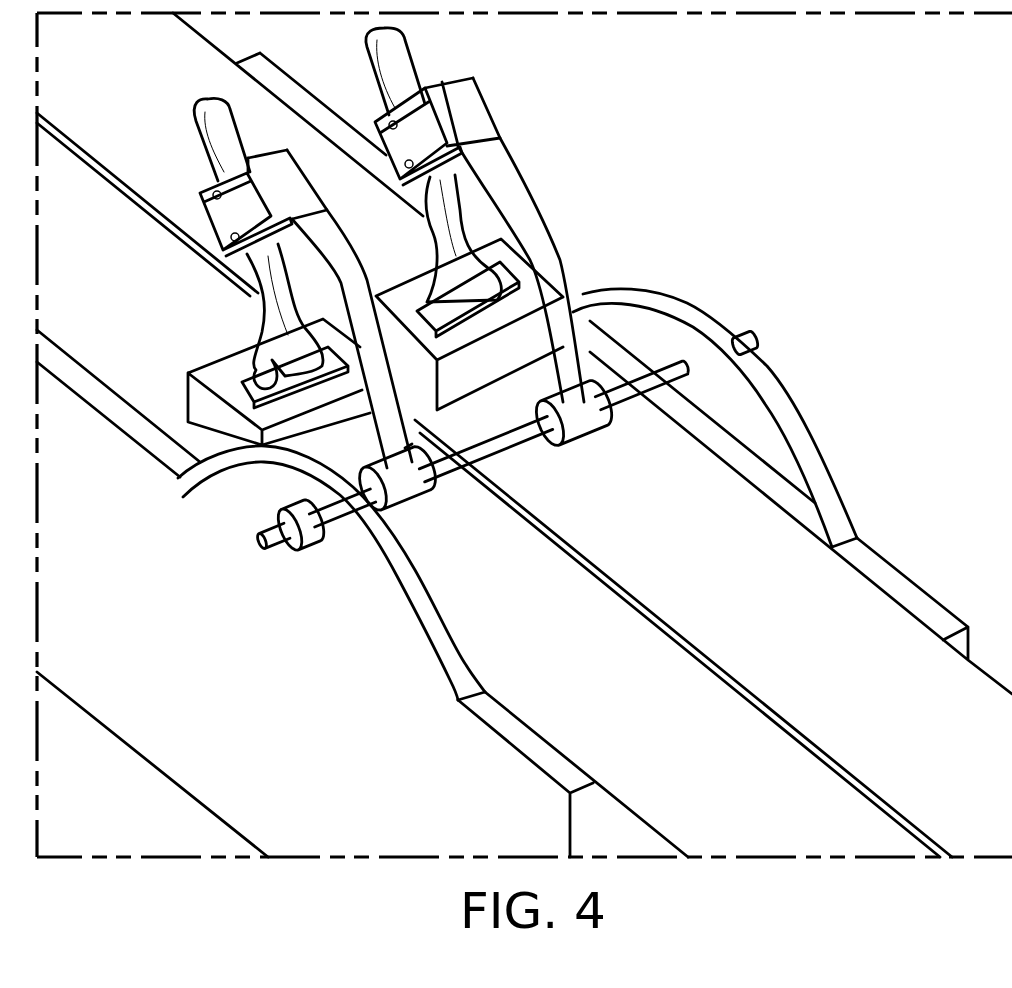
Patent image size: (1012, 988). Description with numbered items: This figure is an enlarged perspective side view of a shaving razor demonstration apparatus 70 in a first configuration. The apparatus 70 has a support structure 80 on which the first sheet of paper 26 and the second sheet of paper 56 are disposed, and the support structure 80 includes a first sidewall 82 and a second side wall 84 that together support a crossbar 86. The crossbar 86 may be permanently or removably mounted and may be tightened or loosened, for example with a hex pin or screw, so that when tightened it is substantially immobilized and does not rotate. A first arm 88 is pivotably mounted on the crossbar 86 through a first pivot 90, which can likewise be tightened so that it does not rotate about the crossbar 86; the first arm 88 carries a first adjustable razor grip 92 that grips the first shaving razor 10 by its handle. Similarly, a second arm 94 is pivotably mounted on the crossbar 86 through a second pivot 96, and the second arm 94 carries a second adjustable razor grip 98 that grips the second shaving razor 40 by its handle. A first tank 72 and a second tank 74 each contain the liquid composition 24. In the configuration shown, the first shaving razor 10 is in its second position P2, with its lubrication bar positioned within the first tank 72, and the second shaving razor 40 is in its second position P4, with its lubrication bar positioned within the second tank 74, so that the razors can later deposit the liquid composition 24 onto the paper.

The first shaving razor 10 is at (192, 134).
The liquid composition 24 is at (446, 325).
The first sheet of paper 26 is at (617, 738).
The second shaving razor 40 is at (407, 53).
The second sheet of paper 56 is at (862, 640).
The shaving razor demonstration apparatus 70 is at (817, 233).
The first tank 72 is at (210, 420).
The second tank 74 is at (528, 348).
The support structure 80 is at (200, 774).
The first sidewall 82 is at (430, 608).
The second side wall 84 is at (790, 438).
The crossbar 86 is at (660, 380).
The first arm 88 is at (412, 412).
The first pivot 90 is at (413, 497).
The first adjustable razor grip 92 is at (290, 173).
The second arm 94 is at (557, 283).
The second pivot 96 is at (587, 423).
The second adjustable razor grip 98 is at (470, 110).
The second position P2 is at (244, 376).
The second position P4 is at (428, 308).